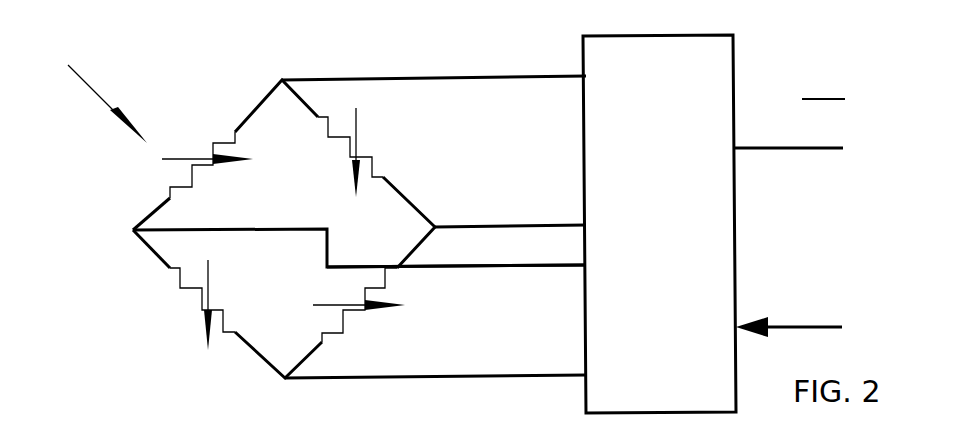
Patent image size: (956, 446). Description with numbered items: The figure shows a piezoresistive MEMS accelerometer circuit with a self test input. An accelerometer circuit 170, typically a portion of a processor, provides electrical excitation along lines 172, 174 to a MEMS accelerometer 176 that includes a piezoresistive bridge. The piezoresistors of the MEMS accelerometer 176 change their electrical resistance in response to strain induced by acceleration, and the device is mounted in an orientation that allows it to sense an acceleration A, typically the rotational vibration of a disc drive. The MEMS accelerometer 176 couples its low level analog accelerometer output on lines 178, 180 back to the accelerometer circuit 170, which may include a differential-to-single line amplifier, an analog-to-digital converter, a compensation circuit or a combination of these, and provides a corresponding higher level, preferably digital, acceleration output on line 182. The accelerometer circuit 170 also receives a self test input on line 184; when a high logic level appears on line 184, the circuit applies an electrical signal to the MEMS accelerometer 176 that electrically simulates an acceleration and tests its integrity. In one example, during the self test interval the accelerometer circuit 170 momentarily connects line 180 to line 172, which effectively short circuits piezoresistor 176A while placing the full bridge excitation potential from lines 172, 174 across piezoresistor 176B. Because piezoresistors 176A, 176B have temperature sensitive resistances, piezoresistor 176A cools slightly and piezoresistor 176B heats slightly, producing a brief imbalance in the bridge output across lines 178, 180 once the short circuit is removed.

The accelerometer circuit 170 is at (670, 246).
The line 172 is at (432, 75).
The line 174 is at (502, 377).
The MEMS accelerometer 176 is at (320, 211).
The piezoresistor 176A is at (202, 163).
The piezoresistor 176B is at (180, 283).
The line 178 is at (533, 225).
The line 180 is at (518, 263).
The line 182 is at (760, 152).
The line 184 is at (765, 332).
The acceleration A is at (98, 93).